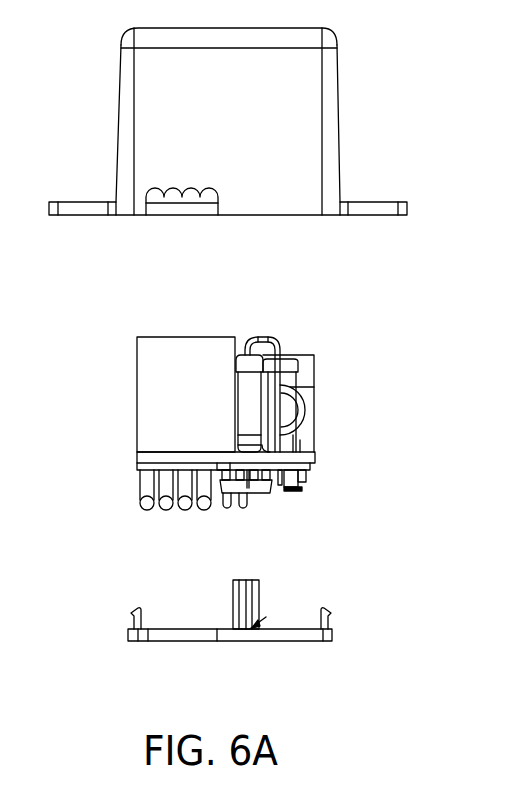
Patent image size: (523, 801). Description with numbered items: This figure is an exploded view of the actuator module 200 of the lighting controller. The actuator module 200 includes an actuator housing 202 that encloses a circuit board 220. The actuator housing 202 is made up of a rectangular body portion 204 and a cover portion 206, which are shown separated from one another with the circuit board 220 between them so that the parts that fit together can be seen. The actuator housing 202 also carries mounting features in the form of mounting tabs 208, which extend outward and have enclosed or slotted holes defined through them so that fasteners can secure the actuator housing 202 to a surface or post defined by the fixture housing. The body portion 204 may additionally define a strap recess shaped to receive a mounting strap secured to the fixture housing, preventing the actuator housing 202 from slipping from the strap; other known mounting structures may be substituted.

The actuator module 200 is at (389, 84).
The actuator housing 202 is at (122, 37).
The rectangular body portion 204 is at (338, 131).
The cover portion 206 is at (332, 636).
The mounting tabs 208 is at (72, 218).
The circuit board 220 is at (315, 457).